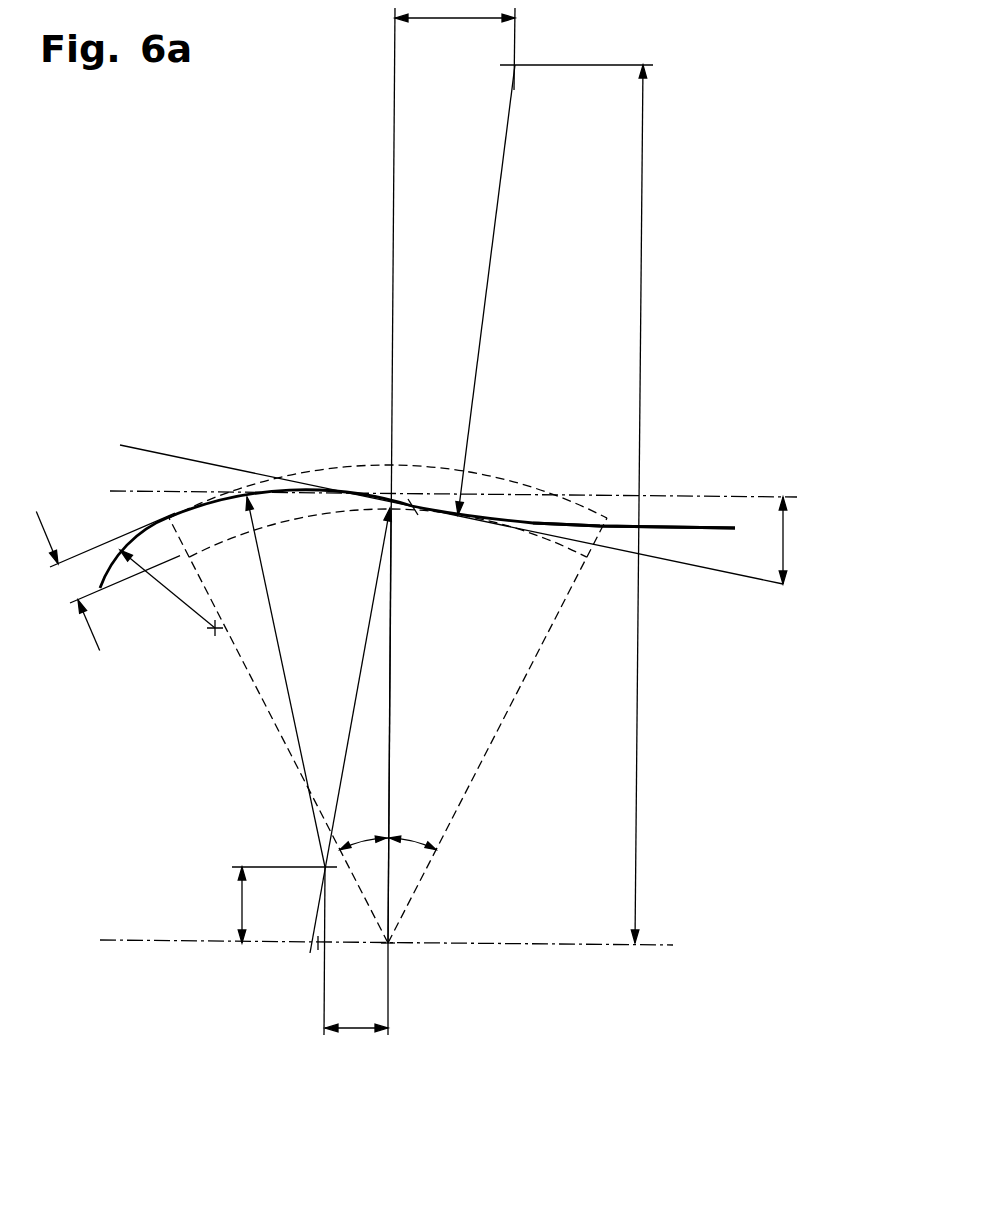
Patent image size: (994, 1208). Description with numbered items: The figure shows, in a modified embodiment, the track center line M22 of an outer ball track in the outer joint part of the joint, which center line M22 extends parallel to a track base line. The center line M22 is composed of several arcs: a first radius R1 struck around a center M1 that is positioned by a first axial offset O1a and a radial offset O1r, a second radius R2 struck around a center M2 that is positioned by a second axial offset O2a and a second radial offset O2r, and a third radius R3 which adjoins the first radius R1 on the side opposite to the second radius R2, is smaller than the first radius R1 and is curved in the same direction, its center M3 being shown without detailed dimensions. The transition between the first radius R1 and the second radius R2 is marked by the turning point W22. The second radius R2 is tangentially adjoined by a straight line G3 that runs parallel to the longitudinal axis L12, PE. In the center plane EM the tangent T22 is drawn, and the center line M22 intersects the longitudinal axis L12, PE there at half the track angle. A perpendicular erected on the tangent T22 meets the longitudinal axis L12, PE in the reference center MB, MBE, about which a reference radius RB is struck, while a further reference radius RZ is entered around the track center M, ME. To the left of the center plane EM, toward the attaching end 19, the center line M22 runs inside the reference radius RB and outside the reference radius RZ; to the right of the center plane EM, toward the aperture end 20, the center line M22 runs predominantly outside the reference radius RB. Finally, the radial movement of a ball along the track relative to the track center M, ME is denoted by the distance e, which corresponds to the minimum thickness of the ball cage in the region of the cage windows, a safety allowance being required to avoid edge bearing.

The center plane EM is at (393, 290).
The second axial offset O2a is at (452, 20).
The center of second radius M2 is at (513, 64).
The second radius R2 is at (487, 297).
The second radial offset O2r is at (645, 298).
The straight line G3 is at (718, 528).
The tangent T22 is at (744, 576).
The track center line M22 is at (683, 530).
The turning point W22 is at (413, 510).
The first radius R1 is at (265, 592).
The third radius R3 is at (173, 594).
The center of third radius M3 is at (213, 633).
The radial ball movement e is at (108, 581).
The reference radius RB is at (356, 675).
The further reference radius RZ is at (393, 690).
The attaching end 19 is at (63, 781).
The aperture end 20 is at (725, 785).
The center of first radius M1 is at (322, 866).
The first radial offset O1r is at (240, 910).
The first axial offset O1a is at (357, 1030).
The reference center MB is at (236, 965).
The reference center MBE is at (312, 947).
The track center M is at (472, 969).
The track center ME is at (472, 969).
The longitudinal axis L12 is at (467, 969).
The longitudinal axis PE is at (467, 969).